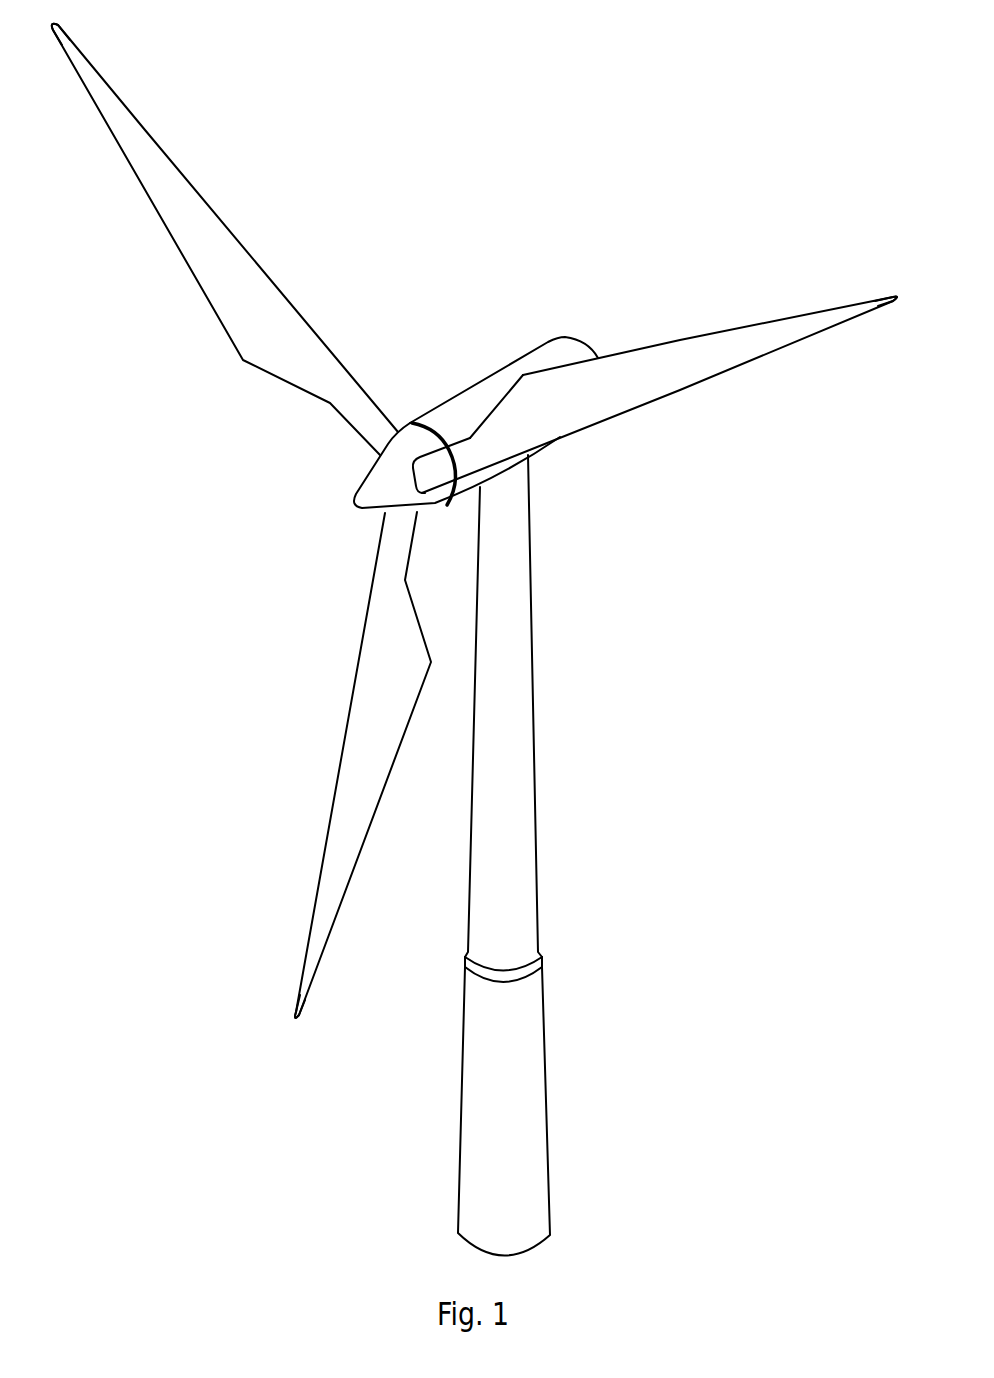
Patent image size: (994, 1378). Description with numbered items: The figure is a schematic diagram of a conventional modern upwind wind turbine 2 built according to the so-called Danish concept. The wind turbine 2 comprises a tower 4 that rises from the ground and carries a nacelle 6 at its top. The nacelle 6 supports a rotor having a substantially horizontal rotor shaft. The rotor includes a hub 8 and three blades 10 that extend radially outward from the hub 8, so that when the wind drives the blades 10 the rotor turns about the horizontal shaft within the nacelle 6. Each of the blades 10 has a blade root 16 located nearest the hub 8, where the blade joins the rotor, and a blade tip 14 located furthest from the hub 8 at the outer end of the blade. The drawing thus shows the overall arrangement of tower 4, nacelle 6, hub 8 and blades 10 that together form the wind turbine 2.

The wind turbine 2 is at (648, 792).
The tower 4 is at (523, 711).
The nacelle 6 is at (467, 402).
The hub 8 is at (372, 490).
The blades 10 is at (257, 333).
The blade tip 14 is at (93, 82).
The blade root 16 is at (380, 442).